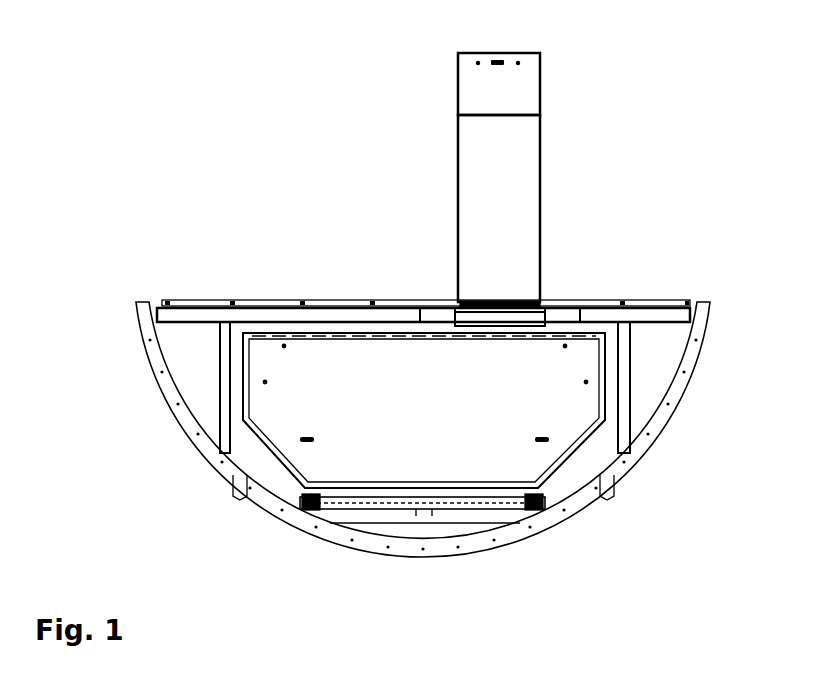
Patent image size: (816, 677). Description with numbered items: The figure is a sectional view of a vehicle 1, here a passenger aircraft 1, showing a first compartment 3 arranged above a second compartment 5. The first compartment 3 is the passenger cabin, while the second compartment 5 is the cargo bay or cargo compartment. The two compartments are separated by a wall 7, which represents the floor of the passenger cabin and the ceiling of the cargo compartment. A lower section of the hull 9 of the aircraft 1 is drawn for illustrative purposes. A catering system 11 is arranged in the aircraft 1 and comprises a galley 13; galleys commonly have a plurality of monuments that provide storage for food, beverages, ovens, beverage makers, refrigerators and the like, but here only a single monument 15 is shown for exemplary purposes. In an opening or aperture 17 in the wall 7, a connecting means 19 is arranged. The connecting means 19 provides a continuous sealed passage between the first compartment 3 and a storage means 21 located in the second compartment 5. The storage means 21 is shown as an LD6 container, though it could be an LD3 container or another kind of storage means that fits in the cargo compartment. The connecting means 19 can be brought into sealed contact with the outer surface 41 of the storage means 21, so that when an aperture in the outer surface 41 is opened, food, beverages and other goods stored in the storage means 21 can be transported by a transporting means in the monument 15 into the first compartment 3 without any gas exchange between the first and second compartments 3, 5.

The vehicle 1 is at (228, 219).
The first compartment 3 is at (328, 155).
The second compartment 5 is at (246, 453).
The wall 7 is at (636, 312).
The hull 9 is at (662, 406).
The catering system 11 is at (549, 247).
The galley 13 is at (546, 175).
The monument 15 is at (516, 183).
The aperture 17 is at (455, 299).
The connecting means 19 is at (495, 318).
The storage means 21 is at (421, 433).
The outer surface 41 is at (305, 333).